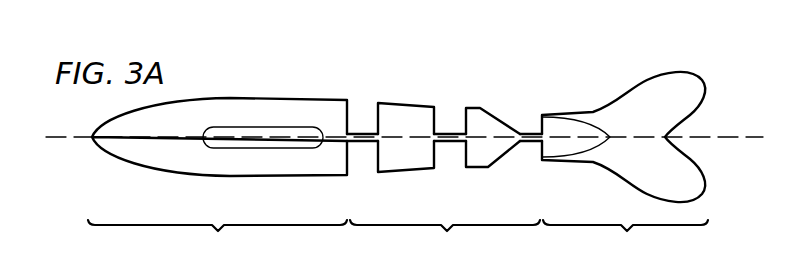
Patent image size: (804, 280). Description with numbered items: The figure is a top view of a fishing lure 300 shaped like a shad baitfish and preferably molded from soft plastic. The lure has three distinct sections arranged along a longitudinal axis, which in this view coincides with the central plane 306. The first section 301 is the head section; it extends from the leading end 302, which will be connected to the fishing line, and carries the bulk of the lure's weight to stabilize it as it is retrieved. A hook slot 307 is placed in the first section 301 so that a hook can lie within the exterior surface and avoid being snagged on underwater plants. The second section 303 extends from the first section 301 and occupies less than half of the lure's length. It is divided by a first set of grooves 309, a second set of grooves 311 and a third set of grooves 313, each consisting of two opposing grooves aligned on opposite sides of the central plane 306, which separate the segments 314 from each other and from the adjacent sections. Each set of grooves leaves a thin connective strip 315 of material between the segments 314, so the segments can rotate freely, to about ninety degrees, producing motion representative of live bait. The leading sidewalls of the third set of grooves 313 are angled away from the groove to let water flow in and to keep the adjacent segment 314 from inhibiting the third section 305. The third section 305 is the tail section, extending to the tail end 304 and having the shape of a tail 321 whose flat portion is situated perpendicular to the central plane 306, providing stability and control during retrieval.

The fishing lure 300 is at (322, 66).
The first section 301 is at (217, 178).
The leading end 302 is at (92, 134).
The second section 303 is at (445, 180).
The tail end 304 is at (672, 140).
The third section 305 is at (625, 187).
The central plane 306 is at (722, 135).
The hook slot 307 is at (280, 128).
The first set of grooves 309 is at (363, 169).
The second set of grooves 311 is at (452, 171).
The third set of grooves 313 is at (523, 167).
The segment 314 is at (405, 101).
The connective strip 315 is at (361, 132).
The tail 321 is at (647, 80).